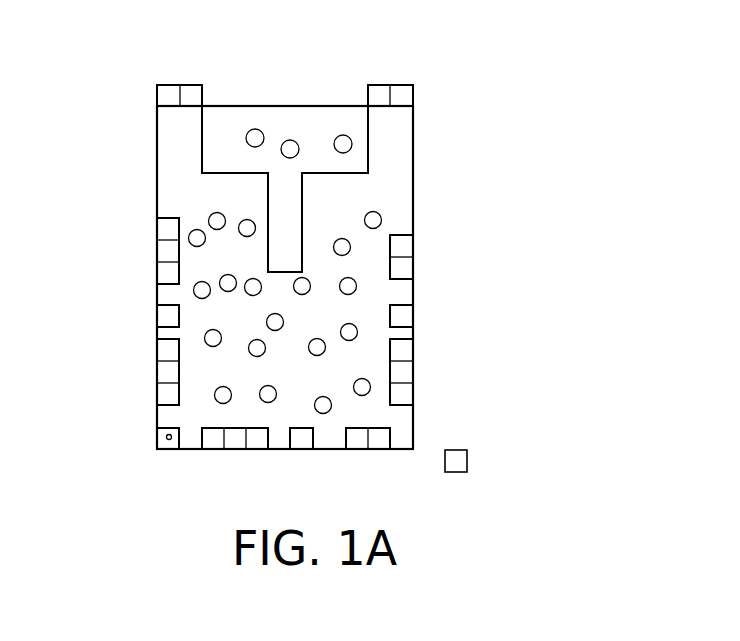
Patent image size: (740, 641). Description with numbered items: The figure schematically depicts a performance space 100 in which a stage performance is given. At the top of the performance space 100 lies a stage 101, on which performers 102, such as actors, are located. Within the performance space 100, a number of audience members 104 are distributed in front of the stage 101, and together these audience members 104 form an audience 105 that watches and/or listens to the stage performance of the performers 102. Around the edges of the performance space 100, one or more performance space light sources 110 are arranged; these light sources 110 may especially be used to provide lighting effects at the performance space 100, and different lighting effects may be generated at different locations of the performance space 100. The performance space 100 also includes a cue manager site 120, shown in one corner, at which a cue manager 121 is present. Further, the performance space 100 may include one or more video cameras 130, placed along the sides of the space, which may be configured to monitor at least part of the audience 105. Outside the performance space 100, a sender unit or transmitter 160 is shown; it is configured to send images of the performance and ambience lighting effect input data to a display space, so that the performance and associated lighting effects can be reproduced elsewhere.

The performance space 100 is at (512, 98).
The stage 101 is at (318, 130).
The performers 102 is at (290, 140).
The audience members 104 is at (194, 290).
The audience 105 is at (366, 300).
The performance space light source 110 is at (172, 92).
The cue manager site 120 is at (166, 431).
The cue manager 121 is at (169, 441).
The video camera 130 is at (168, 317).
The transmitter 160 is at (460, 462).